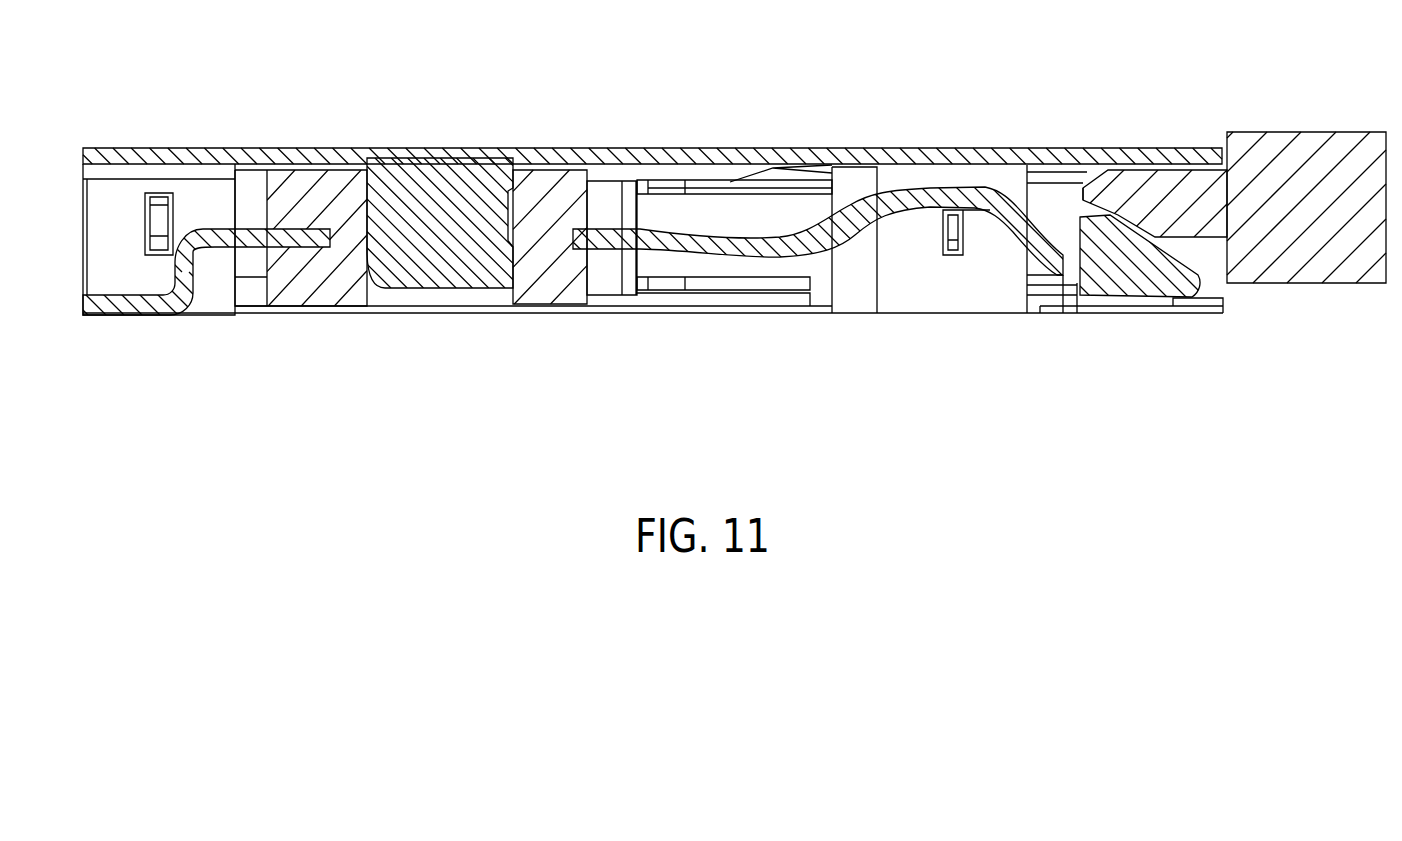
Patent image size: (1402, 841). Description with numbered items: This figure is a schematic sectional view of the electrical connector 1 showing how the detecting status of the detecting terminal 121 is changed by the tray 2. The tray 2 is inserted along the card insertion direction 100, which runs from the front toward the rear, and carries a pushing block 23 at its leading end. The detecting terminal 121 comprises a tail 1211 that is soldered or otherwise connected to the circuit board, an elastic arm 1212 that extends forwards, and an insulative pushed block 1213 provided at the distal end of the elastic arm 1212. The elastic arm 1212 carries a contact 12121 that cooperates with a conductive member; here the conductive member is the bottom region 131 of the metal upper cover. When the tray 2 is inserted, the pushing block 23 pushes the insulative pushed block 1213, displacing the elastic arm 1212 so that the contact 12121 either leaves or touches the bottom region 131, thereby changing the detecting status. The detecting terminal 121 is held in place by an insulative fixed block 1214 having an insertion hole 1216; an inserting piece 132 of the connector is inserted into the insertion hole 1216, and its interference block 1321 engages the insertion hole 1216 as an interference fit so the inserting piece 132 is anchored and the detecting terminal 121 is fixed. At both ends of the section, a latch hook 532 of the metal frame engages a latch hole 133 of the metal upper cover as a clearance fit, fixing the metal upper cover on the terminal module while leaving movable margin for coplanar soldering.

The card insertion direction 100 is at (1022, 42).
The electrical connector 1 is at (1296, 423).
The tray 2 is at (1310, 132).
The pushing block 23 is at (1127, 190).
The detecting terminal 121 is at (893, 224).
The tail 1211 is at (108, 300).
The elastic arm 1212 is at (815, 245).
The contact 12121 is at (1006, 220).
The insulative pushed block 1213 is at (1133, 267).
The insulative fixed block 1214 is at (305, 280).
The insertion hole 1216 is at (493, 306).
The bottom region 131 is at (1015, 174).
The inserting piece 132 is at (441, 233).
The interference block 1321 is at (510, 216).
The latch hole 133 is at (138, 218).
The latch hook 532 is at (160, 217).